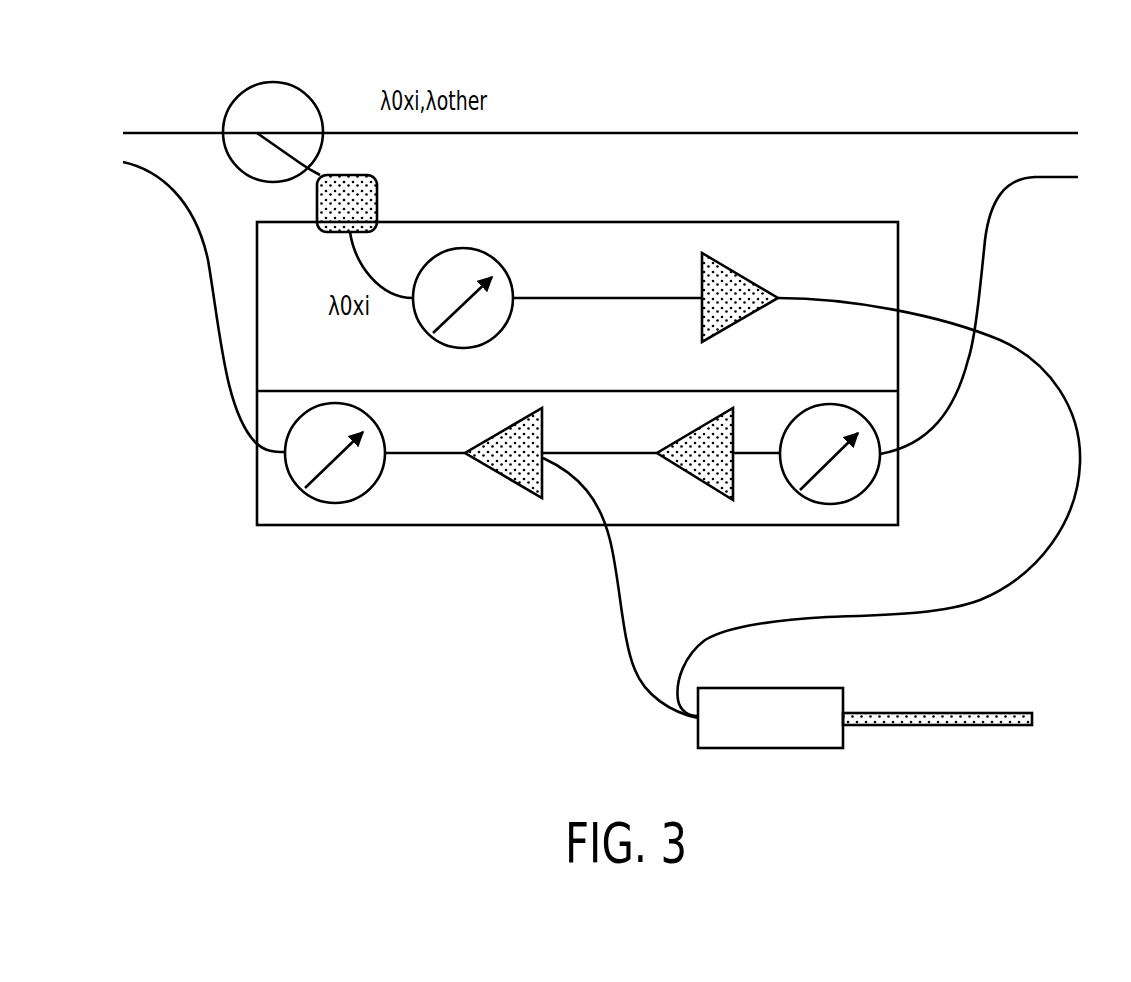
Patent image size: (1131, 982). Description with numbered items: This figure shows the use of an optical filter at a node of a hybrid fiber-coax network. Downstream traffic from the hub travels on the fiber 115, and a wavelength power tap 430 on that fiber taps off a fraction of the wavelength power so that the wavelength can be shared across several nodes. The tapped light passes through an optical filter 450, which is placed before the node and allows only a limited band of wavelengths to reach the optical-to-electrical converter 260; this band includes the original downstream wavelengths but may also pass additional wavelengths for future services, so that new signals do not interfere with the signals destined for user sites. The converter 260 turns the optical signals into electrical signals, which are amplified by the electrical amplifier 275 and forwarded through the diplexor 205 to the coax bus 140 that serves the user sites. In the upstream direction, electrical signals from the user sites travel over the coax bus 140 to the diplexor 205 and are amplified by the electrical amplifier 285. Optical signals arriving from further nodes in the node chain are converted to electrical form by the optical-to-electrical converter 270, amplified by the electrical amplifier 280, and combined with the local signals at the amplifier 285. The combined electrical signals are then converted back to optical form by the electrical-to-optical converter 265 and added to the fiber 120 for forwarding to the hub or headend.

The fiber 115 is at (1022, 133).
The fiber 120 is at (1037, 178).
The coax bus 140 is at (980, 692).
The diplexor 205 is at (684, 733).
The optical-to-electrical converter 260 is at (417, 323).
The electrical-to-optical converter 265 is at (335, 505).
The optical-to-electrical converter 270 is at (828, 503).
The electrical amplifier 275 is at (702, 323).
The electrical amplifier 280 is at (713, 490).
The electrical amplifier 285 is at (527, 490).
The wavelength power tap 430 is at (338, 68).
The optical filter 450 is at (398, 187).